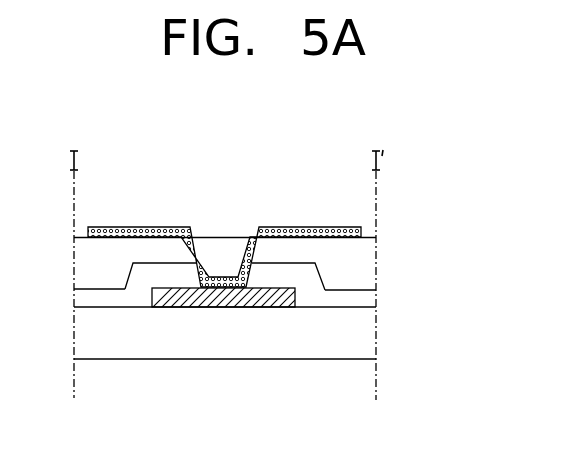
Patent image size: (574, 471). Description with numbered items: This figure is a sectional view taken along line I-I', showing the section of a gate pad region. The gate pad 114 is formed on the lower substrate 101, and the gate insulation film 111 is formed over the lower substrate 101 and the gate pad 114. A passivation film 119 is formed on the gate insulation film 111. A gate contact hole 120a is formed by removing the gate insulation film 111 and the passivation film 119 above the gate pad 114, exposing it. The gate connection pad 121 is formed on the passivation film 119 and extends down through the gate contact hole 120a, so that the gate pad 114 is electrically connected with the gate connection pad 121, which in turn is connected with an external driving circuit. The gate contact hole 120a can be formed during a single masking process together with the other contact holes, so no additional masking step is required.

The lower substrate 101 is at (370, 336).
The gate insulation film 111 is at (368, 299).
The gate pad 114 is at (225, 308).
The passivation film 119 is at (368, 259).
The gate contact hole 120a is at (227, 235).
The gate connection pad 121 is at (297, 232).